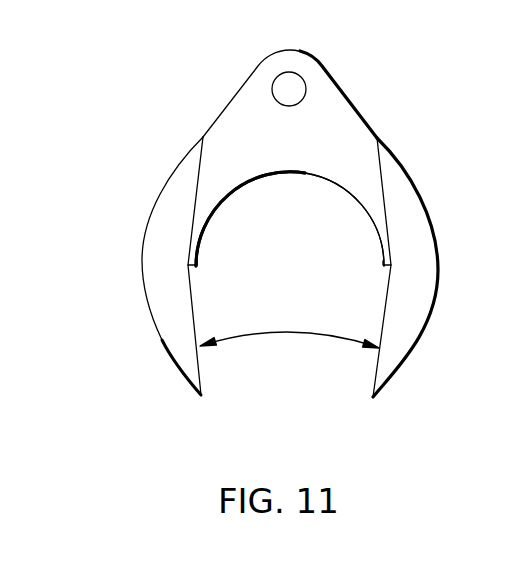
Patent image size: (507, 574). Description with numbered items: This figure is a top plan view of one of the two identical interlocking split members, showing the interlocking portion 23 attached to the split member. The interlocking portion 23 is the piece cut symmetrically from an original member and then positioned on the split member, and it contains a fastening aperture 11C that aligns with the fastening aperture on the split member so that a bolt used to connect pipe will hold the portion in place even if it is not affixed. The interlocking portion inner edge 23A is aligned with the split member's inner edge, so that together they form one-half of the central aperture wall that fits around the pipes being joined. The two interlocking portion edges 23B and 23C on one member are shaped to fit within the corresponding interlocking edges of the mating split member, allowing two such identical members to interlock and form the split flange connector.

The fastening aperture 11C is at (298, 87).
The interlocking portion 23 is at (313, 151).
The interlocking portion inner edge 23A is at (365, 215).
The interlocking portion edge 23B is at (195, 183).
The interlocking portion edge 23C is at (382, 182).